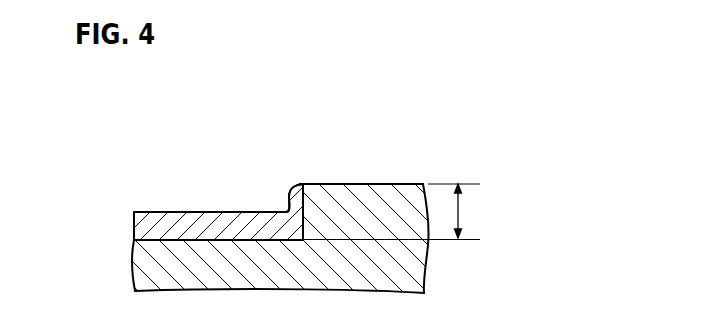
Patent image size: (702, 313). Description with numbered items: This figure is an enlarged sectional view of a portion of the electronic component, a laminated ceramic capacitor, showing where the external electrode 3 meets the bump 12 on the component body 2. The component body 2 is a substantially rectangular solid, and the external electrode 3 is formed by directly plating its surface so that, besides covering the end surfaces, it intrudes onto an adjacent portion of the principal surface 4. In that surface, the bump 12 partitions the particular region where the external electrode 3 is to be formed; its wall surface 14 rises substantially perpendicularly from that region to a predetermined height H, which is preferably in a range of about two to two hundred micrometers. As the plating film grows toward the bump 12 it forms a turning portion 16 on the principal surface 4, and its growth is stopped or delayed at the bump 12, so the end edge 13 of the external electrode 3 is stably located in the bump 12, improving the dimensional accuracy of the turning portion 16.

The component body 2 is at (399, 184).
The external electrode 3 is at (134, 215).
The principal surface 4 is at (362, 183).
The bump 12 is at (303, 184).
The end edge 13 is at (298, 185).
The wall surface 14 is at (285, 211).
The turning portion 16 is at (160, 222).
The height H is at (459, 209).